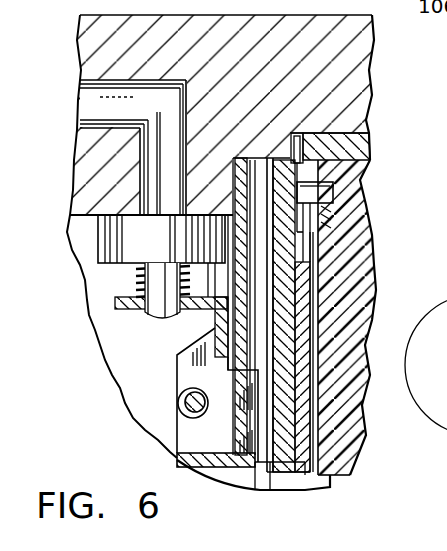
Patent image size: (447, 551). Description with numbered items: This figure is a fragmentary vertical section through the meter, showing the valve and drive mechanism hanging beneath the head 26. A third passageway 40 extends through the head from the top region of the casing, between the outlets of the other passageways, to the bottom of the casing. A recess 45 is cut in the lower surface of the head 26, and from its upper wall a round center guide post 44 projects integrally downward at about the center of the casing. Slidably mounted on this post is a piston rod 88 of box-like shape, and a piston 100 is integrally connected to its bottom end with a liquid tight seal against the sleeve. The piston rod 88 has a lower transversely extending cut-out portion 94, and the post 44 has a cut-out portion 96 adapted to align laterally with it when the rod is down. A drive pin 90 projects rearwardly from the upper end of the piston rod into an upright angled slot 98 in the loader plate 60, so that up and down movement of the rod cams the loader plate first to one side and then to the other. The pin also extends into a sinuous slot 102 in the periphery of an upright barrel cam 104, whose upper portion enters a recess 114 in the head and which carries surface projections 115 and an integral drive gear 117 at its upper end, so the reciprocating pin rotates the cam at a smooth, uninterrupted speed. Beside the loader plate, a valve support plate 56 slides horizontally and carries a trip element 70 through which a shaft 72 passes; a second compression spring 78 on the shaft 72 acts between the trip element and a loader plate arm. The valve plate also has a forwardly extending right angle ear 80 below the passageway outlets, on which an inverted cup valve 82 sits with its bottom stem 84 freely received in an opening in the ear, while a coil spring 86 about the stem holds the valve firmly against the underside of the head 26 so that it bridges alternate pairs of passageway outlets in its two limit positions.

The head 26 is at (348, 101).
The third passageway 40 is at (102, 110).
The recess 45 is at (238, 158).
The recess 114 is at (294, 133).
The drive gear 117 is at (358, 149).
The drive pin 90 is at (323, 191).
The sinuous slot 102 is at (330, 213).
The upright angled slot 98 is at (305, 218).
The center guide post 44 is at (300, 273).
The piston rod 88 is at (262, 284).
The surface projections 115 is at (278, 303).
The cut-out portion 96 is at (315, 363).
The barrel cam 104 is at (340, 443).
The loader plate 60 is at (318, 477).
The inverted cup valve 82 is at (103, 247).
The coil spring 86 is at (138, 280).
The ear 80 is at (147, 312).
The bottom stem 84 is at (212, 302).
The valve support plate 56 is at (220, 326).
The trip element 70 is at (185, 362).
The cut-out portion 94 is at (180, 394).
The second compression spring 78 is at (179, 402).
The shaft 72 is at (175, 426).
The piston 100 is at (178, 458).